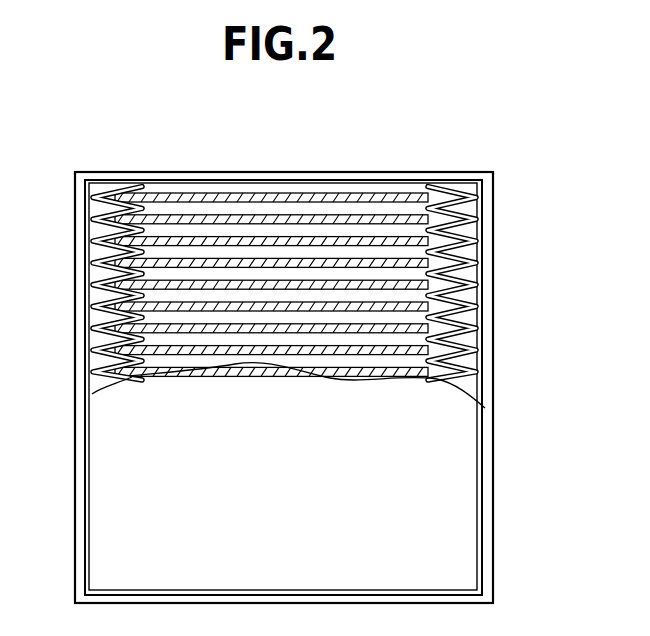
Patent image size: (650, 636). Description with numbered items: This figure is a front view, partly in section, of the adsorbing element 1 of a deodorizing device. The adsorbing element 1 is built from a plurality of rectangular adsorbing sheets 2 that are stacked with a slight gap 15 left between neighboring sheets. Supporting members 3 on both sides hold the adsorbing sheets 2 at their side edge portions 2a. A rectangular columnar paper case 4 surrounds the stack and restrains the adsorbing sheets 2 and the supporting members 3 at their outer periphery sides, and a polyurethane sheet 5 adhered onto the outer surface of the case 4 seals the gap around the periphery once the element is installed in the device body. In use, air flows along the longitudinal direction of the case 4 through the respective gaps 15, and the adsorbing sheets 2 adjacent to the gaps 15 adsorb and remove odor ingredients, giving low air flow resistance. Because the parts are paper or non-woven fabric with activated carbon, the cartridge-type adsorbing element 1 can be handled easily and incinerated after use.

The adsorbing element 1 is at (522, 346).
The adsorbing sheets 2 is at (353, 242).
The side edge portions 2a is at (480, 408).
The supporting members 3 is at (463, 205).
The paper case 4 is at (485, 472).
The polyurethane sheet 5 is at (485, 540).
The gap 15 is at (199, 232).